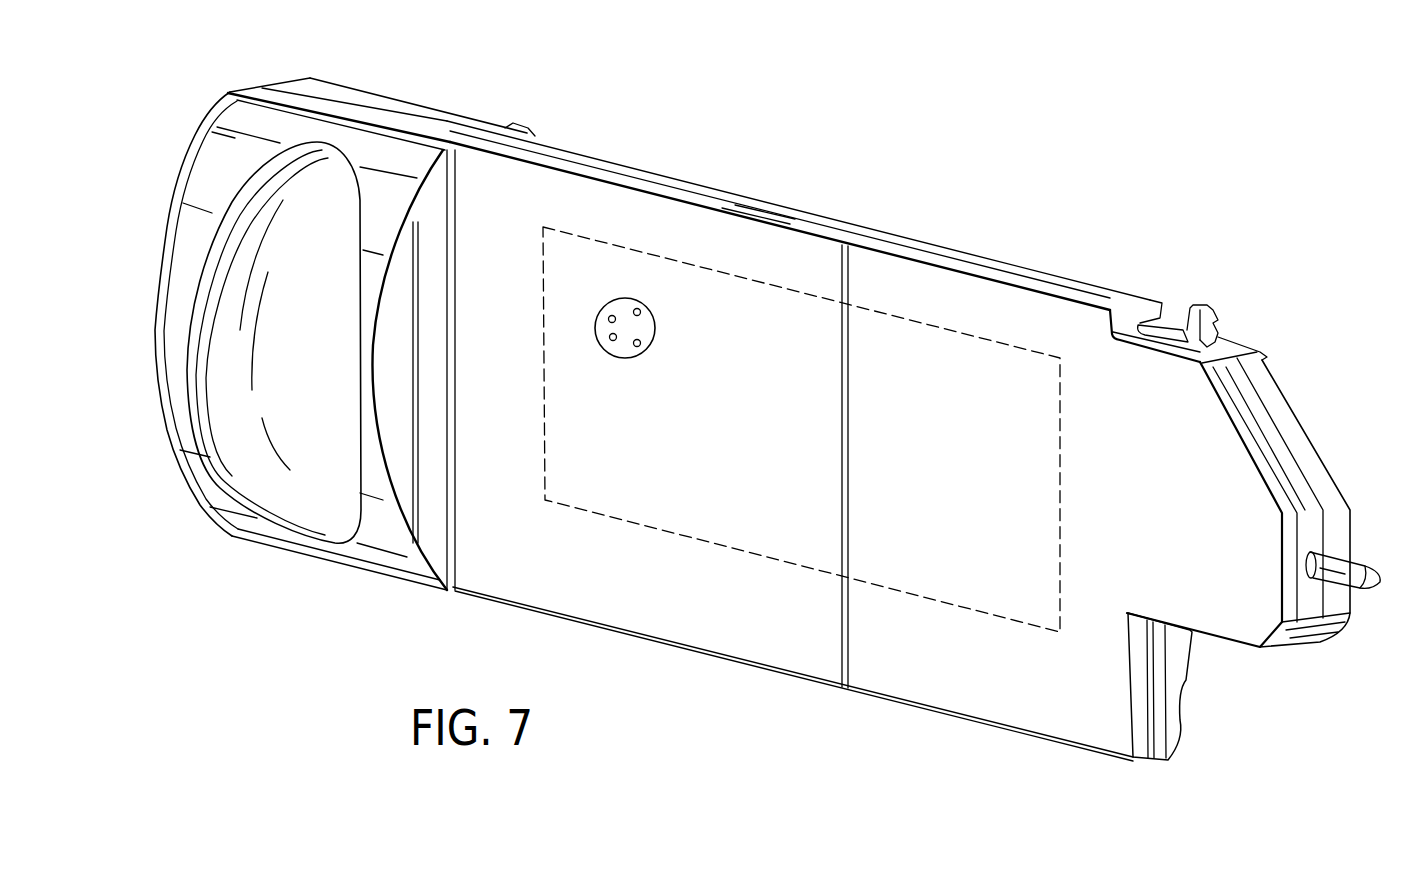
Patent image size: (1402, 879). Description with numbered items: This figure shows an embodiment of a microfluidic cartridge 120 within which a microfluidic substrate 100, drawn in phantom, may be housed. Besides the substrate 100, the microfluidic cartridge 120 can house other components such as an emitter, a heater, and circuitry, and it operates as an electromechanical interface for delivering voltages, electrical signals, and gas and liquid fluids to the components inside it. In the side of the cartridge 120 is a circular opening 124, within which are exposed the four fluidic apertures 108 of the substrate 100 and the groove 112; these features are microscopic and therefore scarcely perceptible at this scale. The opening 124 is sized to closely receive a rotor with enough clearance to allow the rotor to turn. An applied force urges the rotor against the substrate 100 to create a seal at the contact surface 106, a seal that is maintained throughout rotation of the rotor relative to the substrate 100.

The microfluidic substrate 100 is at (1062, 465).
The contact surface 106 is at (641, 329).
The fluidic apertures 108 is at (647, 325).
The groove 112 is at (612, 330).
The microfluidic cartridge 120 is at (1273, 446).
The circular opening 124 is at (633, 354).